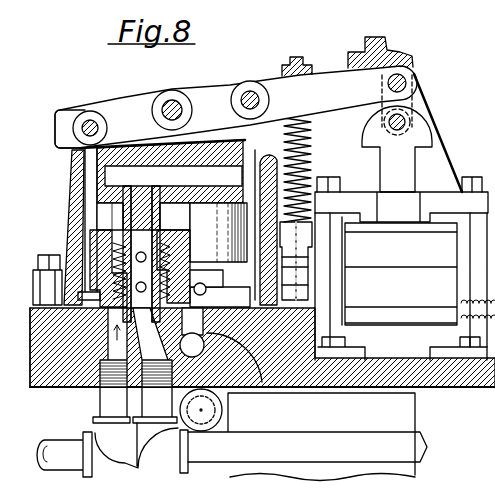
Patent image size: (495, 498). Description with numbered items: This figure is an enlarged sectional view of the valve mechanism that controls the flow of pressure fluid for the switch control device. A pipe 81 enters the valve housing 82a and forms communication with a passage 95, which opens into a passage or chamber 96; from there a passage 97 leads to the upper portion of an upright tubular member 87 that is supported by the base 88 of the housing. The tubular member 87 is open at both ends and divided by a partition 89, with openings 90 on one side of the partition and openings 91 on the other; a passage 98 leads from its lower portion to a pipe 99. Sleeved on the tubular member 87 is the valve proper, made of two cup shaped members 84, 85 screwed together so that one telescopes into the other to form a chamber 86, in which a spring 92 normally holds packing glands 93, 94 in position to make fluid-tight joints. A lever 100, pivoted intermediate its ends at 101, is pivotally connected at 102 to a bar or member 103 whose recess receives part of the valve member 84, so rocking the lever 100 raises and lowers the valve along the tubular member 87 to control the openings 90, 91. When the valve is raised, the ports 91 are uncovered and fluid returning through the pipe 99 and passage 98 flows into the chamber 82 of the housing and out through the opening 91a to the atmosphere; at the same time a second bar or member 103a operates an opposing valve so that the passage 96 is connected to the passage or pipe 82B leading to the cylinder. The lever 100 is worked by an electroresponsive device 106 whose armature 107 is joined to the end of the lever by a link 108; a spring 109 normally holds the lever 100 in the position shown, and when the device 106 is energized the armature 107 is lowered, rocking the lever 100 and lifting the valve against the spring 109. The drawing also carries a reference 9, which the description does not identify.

The flow direction arrow 9 is at (15, 313).
The pipe 81 is at (66, 465).
The chamber 82 is at (280, 290).
The valve housing 82a is at (72, 210).
The passage or pipe 82B is at (203, 423).
The cup shaped member 84 is at (100, 245).
The cup shaped member 85 is at (30, 335).
The chamber 86 is at (110, 260).
The tubular member 87 is at (178, 179).
The base 88 is at (30, 360).
The partition 89 is at (182, 260).
The openings 90 is at (172, 252).
The openings 91 is at (178, 272).
The opening 91a is at (250, 358).
The spring 92 is at (40, 268).
The packing gland 93 is at (182, 240).
The packing gland 94 is at (67, 167).
The passage 95 is at (100, 385).
The passage or chamber 96 is at (190, 150).
The passage 97 is at (155, 150).
The passage 98 is at (112, 393).
The pipe 99 is at (360, 436).
The lever 100 is at (117, 103).
The pivot 101 is at (174, 100).
The pivotal connection 102 is at (90, 120).
The bar or member 103 is at (67, 146).
The bar or member 103a is at (258, 70).
The electroresponsive device 106 is at (392, 250).
The armature 107 is at (410, 200).
The link 108 is at (408, 99).
The spring 109 is at (312, 140).